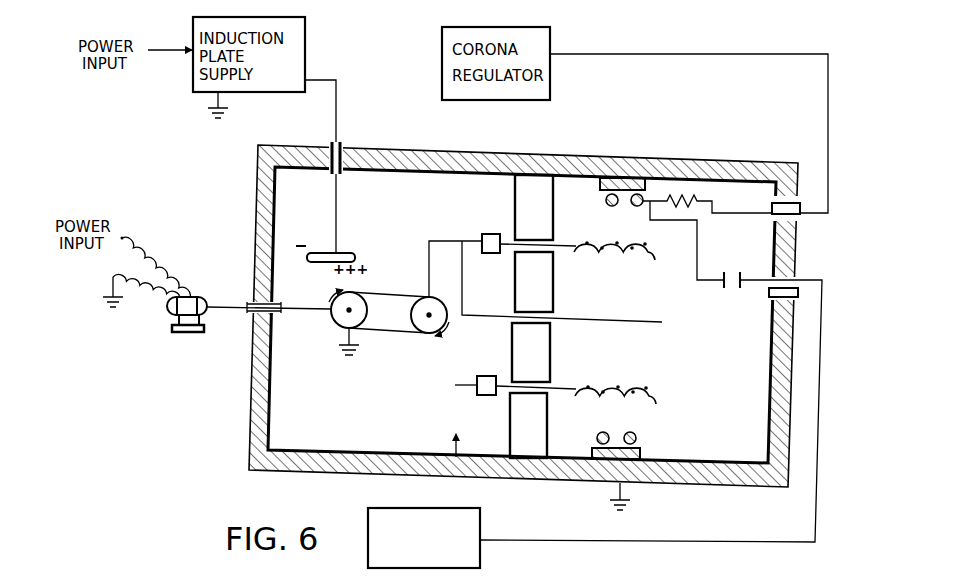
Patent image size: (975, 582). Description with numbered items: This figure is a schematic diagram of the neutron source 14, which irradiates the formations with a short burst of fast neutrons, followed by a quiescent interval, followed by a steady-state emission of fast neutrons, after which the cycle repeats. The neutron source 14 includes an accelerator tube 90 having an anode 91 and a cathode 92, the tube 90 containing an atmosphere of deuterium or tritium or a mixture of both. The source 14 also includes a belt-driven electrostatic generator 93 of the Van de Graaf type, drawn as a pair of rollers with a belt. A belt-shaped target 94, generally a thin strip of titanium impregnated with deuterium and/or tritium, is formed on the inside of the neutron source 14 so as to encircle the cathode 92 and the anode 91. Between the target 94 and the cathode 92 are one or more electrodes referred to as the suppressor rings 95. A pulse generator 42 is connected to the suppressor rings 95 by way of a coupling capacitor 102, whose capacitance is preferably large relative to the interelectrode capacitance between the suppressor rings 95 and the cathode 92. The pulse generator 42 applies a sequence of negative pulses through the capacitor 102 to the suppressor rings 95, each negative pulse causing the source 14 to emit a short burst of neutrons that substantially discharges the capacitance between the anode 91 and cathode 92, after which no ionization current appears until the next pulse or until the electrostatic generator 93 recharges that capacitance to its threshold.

The neutron source 14 is at (501, 311).
The accelerator tube 90 is at (708, 162).
The belt-driven electrostatic generator 93 is at (386, 296).
The anode 91 is at (656, 315).
The cathode 92 is at (574, 246).
The suppressor rings 95 is at (604, 201).
The coupling capacitor 102 is at (737, 292).
The belt-shaped target 94 is at (640, 455).
The pulse generator 42 is at (421, 509).